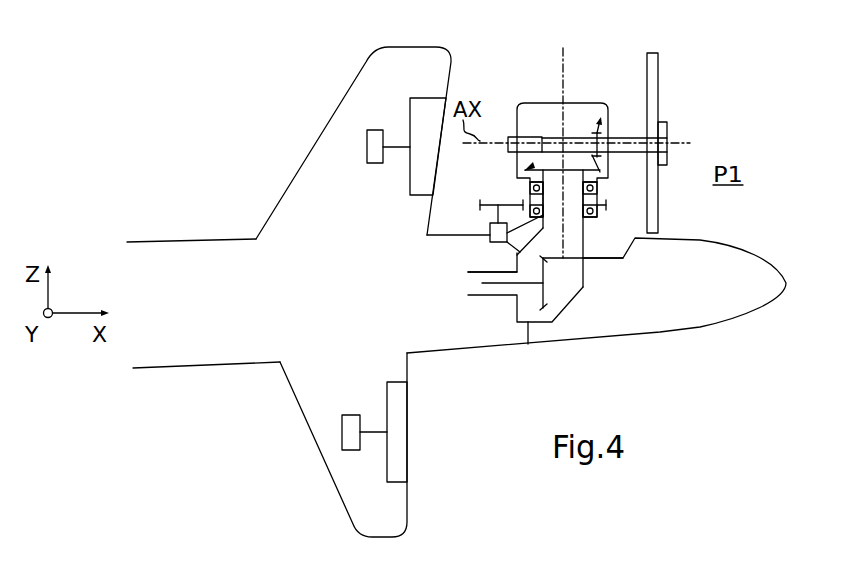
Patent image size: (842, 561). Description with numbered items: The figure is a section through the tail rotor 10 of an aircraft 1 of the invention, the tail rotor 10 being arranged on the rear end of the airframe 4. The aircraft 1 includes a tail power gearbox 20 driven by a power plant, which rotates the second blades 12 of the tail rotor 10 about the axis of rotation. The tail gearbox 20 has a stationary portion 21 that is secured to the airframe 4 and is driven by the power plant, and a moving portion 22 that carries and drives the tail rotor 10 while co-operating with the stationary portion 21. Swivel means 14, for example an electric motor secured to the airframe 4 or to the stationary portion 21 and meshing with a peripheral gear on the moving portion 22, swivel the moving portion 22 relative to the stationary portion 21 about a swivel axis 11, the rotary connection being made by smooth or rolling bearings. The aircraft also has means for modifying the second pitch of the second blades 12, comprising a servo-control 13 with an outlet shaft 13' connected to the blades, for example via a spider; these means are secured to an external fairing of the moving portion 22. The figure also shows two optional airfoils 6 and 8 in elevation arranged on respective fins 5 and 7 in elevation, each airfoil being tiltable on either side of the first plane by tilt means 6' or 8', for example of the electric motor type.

The aircraft 1 is at (164, 153).
The airframe 4 is at (191, 315).
The fin 5 is at (340, 98).
The airfoil 6 is at (420, 125).
The tilt means 6' is at (381, 171).
The fin 7 is at (305, 425).
The airfoil 8 is at (420, 432).
The tilt means 8' is at (360, 406).
The tail rotor 10 is at (708, 58).
The swivel axis 11 is at (560, 57).
The second blades 12 is at (658, 63).
The servo-control 13 is at (498, 161).
The outlet shaft 13' is at (681, 131).
The swivel means 14 is at (490, 233).
The tail power gearbox 20 is at (620, 243).
The stationary portion 21 is at (510, 253).
The moving portion 22 is at (594, 88).